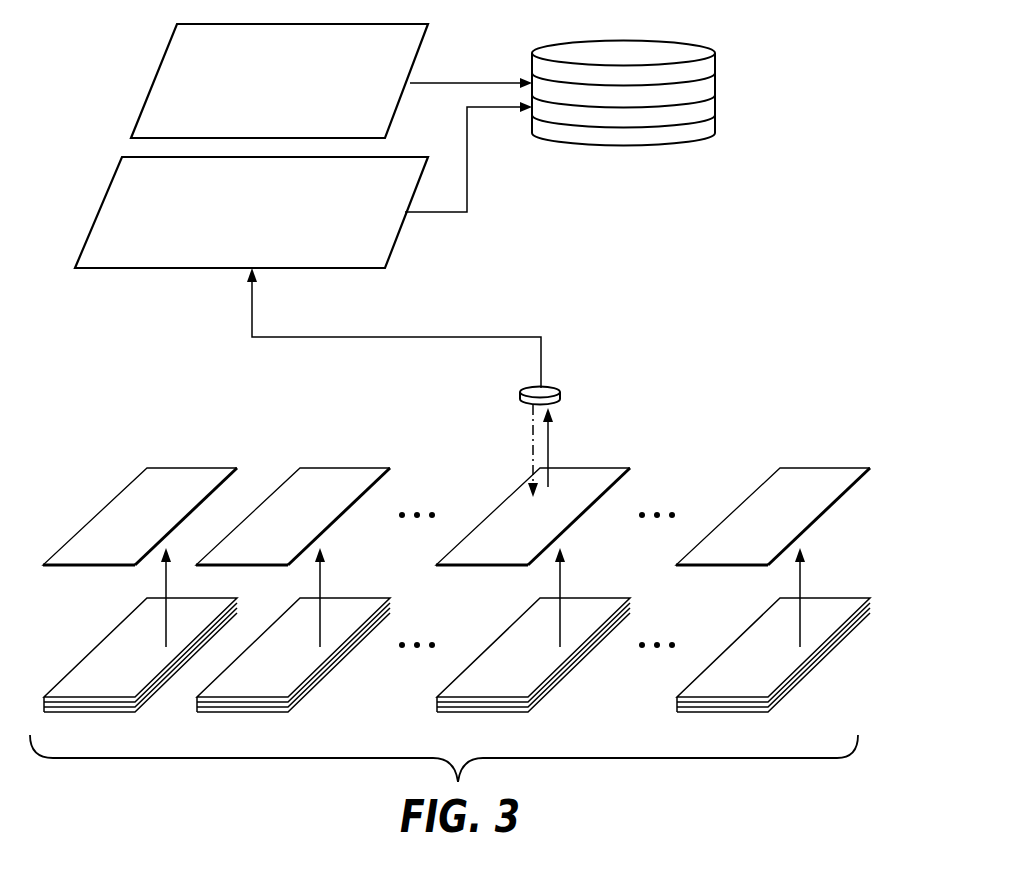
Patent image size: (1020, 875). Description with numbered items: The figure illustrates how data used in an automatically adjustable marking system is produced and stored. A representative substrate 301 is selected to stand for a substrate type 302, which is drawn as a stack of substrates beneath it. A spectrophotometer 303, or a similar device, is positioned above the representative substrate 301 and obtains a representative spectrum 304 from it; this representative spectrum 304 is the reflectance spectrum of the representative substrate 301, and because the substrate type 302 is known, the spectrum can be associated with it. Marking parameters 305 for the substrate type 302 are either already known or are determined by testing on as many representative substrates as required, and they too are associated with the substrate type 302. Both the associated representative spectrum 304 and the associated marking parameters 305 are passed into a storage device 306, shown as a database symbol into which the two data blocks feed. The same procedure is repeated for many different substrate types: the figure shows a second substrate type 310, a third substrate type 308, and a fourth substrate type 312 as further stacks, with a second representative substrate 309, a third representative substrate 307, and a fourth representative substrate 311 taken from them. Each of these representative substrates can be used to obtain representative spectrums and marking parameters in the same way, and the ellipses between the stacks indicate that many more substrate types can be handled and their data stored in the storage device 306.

The representative substrate 301 is at (587, 475).
The substrate type 302 is at (563, 675).
The spectrophotometer 303 is at (551, 385).
The representative spectrum 304 is at (100, 203).
The marking parameters 305 is at (150, 82).
The database 306 is at (677, 50).
The third representative substrate 307 is at (343, 475).
The third substrate type 308 is at (327, 675).
The second representative substrate 309 is at (183, 475).
The second substrate type 310 is at (137, 618).
The fourth representative substrate 311 is at (812, 475).
The fourth substrate type 312 is at (803, 675).